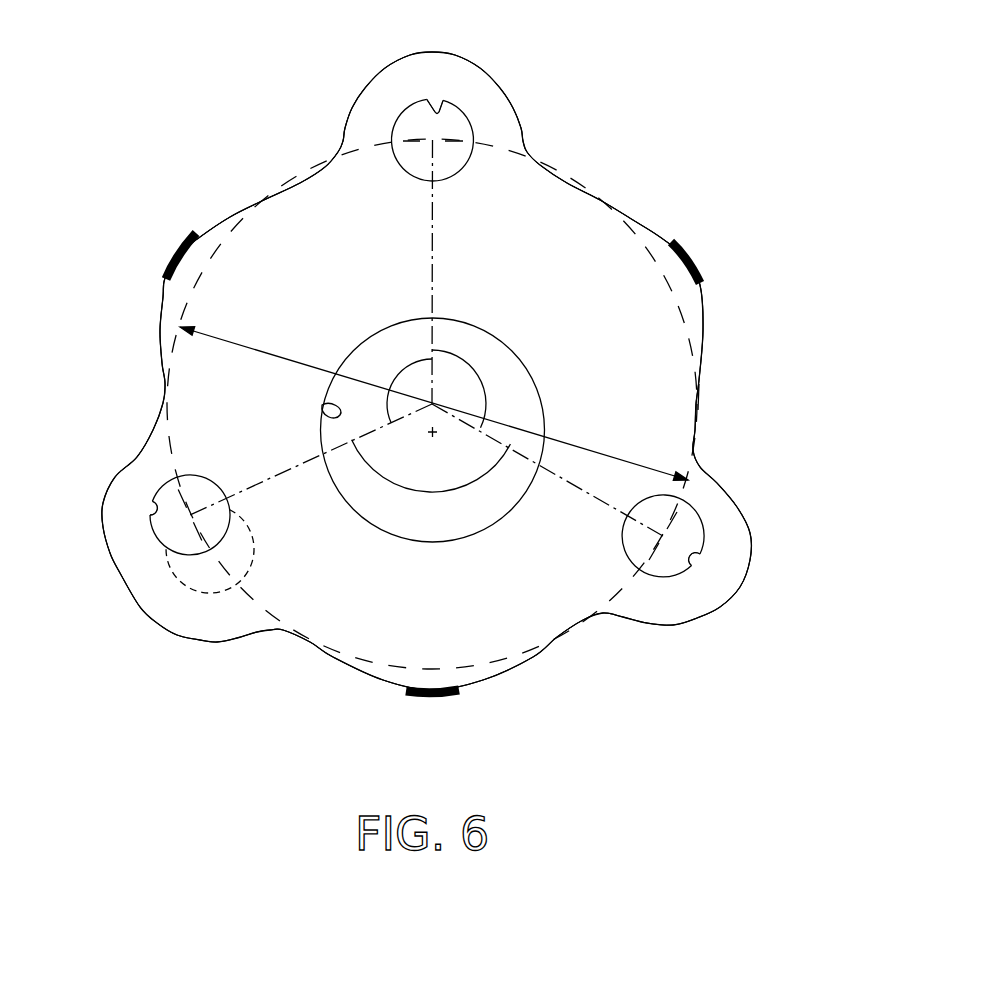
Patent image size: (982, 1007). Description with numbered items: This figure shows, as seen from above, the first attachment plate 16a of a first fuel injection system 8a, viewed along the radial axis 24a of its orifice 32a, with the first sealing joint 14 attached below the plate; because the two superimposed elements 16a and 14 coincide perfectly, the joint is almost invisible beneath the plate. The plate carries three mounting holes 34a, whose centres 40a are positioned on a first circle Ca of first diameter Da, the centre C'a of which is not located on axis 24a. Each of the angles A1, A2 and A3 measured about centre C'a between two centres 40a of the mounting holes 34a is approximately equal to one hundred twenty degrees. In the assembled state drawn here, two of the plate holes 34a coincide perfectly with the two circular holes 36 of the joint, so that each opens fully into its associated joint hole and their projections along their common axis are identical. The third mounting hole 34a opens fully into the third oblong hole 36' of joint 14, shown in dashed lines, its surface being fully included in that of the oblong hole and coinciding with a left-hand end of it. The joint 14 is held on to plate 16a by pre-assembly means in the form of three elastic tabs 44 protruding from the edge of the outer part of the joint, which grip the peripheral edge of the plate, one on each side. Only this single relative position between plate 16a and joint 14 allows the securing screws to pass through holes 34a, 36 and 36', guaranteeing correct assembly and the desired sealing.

The first fuel injection system 8a is at (288, 145).
The first sealing joint 14 is at (427, 371).
The first attachment plate 16a is at (527, 140).
The mounting holes 34a is at (150, 506).
The mounting holes 36 is at (451, 345).
The third mounting hole of oblong section 36' is at (169, 578).
The centres of the mounting holes 40a is at (433, 140).
The elastic tabs 44 is at (177, 250).
The first circle Ca is at (214, 227).
The centre of the first circle C'a is at (426, 338).
The first diameter Da is at (283, 358).
The angle A1 is at (423, 493).
The angle A2 is at (473, 367).
The angle A3 is at (400, 372).
The radial axis 24a is at (433, 437).
The orifice 32a is at (338, 414).